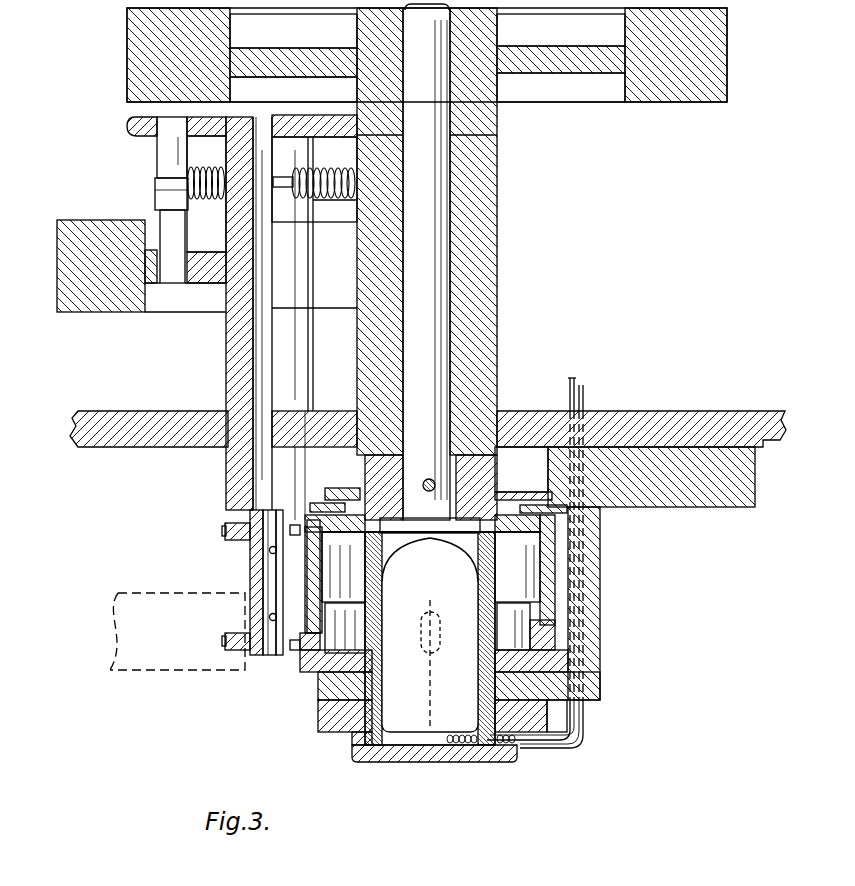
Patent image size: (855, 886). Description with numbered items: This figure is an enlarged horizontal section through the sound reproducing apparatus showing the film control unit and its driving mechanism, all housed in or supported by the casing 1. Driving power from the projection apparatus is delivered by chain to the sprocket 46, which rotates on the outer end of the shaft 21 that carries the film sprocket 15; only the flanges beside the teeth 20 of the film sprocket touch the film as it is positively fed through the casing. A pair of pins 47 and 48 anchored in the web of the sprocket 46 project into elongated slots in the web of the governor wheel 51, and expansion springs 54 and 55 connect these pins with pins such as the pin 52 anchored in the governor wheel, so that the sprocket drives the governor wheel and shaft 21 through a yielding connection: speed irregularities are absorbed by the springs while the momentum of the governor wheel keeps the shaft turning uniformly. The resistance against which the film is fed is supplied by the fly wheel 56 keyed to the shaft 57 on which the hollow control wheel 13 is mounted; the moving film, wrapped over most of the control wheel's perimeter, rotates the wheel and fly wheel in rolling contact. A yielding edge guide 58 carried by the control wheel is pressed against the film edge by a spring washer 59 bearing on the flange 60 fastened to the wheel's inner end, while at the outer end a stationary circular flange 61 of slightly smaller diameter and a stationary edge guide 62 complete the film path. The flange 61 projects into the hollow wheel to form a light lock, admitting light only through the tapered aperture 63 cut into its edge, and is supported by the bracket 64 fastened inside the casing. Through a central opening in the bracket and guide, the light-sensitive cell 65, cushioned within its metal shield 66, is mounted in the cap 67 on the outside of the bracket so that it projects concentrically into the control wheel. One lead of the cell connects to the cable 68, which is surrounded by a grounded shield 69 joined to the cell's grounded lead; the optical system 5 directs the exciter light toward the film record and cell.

The casing 1 is at (636, 411).
The optical system 5 is at (150, 593).
The control wheel 13 is at (325, 568).
The film sprocket 15 is at (255, 566).
The teeth 20 is at (224, 531).
The shaft 21 is at (255, 485).
The sprocket 46 is at (133, 128).
The pin 47 is at (165, 160).
The pin 48 is at (357, 159).
The governor wheel 51 is at (57, 253).
The pin 52 is at (285, 212).
The expansion springs 54 is at (183, 194).
The expansion springs 55 is at (345, 200).
The fly wheel 56 is at (127, 70).
The shaft 57 is at (452, 262).
The yielding edge guide 58 is at (600, 522).
The spring washer 59 is at (546, 492).
The flange 60 is at (508, 492).
The stationary circular flange 61 is at (555, 636).
The stationary edge guide 62 is at (307, 682).
The aperture 63 is at (312, 636).
The bracket 64 is at (597, 614).
The light-sensitive cell 65 is at (500, 568).
The metal shield 66 is at (500, 596).
The cap 67 is at (373, 752).
The cable 68 is at (578, 385).
The grounded shield 69 is at (584, 398).